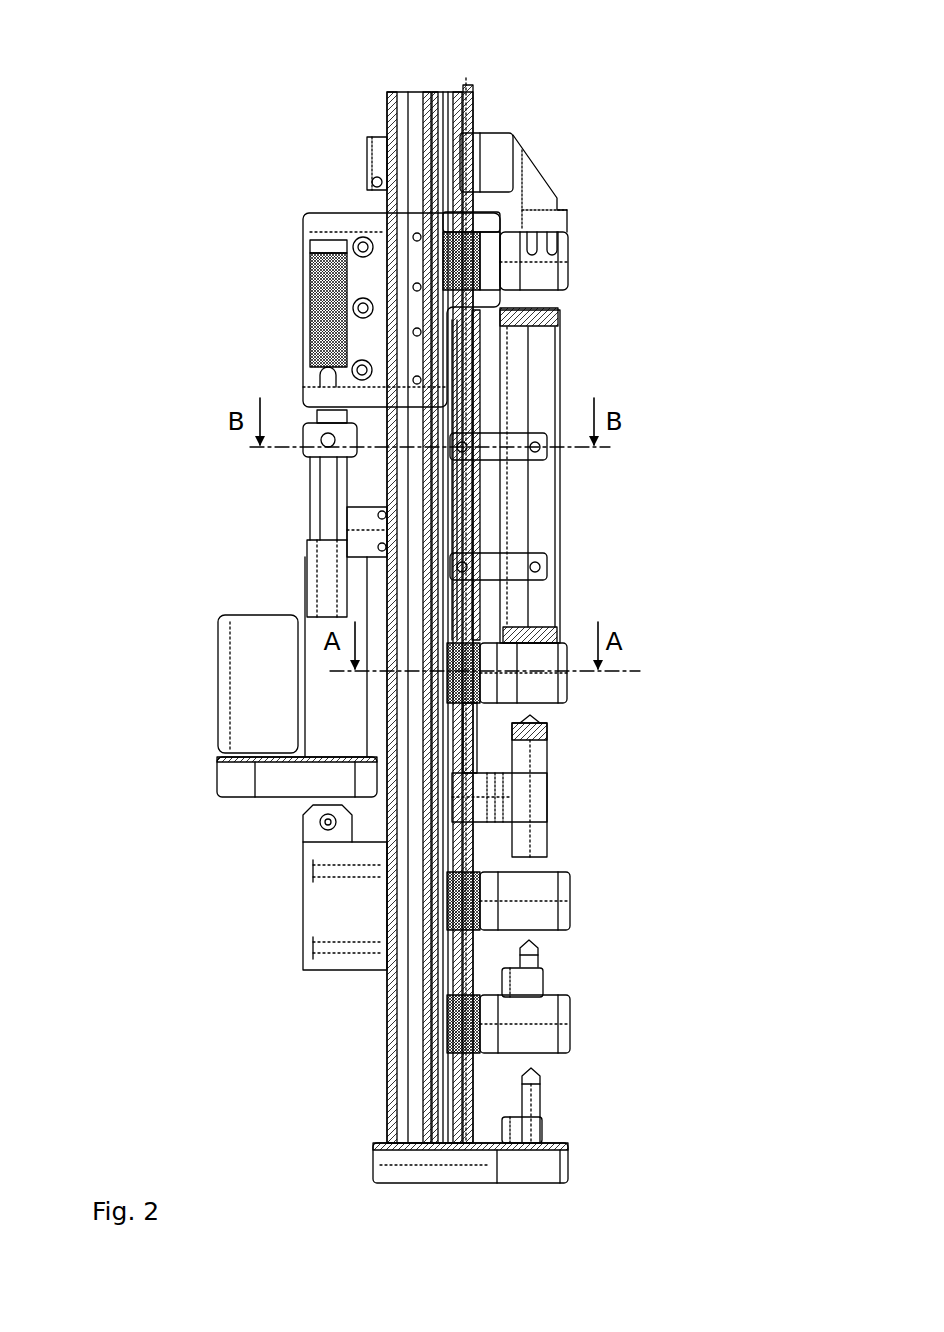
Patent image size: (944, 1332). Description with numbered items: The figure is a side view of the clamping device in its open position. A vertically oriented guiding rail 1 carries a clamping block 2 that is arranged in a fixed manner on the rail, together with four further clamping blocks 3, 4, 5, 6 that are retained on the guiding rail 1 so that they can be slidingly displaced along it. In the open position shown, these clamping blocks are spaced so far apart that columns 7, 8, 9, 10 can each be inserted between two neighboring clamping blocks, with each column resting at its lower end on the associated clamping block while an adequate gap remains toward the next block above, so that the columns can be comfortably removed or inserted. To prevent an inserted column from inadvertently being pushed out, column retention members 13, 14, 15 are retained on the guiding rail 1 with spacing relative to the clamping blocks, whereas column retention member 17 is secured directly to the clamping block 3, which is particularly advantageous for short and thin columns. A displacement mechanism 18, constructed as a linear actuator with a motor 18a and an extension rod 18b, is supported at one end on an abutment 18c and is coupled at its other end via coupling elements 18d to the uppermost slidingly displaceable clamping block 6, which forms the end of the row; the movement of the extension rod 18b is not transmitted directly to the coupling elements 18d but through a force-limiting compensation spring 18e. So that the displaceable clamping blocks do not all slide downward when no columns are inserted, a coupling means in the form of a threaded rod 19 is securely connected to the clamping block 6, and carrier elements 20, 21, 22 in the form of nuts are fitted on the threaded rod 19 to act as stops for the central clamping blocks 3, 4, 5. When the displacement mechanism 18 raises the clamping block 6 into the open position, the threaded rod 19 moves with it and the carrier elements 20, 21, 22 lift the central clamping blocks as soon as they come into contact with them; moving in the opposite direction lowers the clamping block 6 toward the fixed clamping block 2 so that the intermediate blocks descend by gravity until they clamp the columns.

The guiding rail 1 is at (462, 110).
The clamping block 2 is at (548, 1173).
The clamping block 3 is at (567, 1025).
The clamping block 4 is at (568, 897).
The clamping block 5 is at (550, 660).
The clamping block 6 is at (553, 268).
The column 7 is at (527, 1103).
The column 8 is at (537, 958).
The column 9 is at (538, 843).
The column 10 is at (537, 480).
The column retention member 13 is at (520, 442).
The column retention member 14 is at (540, 566).
The column retention member 15 is at (515, 795).
The column retention member 17 is at (507, 1132).
The displacement mechanism 18 is at (255, 553).
The motor 18a is at (237, 660).
The extension rod 18b is at (330, 487).
The abutment 18c is at (330, 905).
The coupling elements 18d is at (337, 222).
The force-limiting compensation spring 18e is at (325, 275).
The threaded rod 19 is at (467, 748).
The carrier element 20 is at (472, 1053).
The carrier element 21 is at (470, 932).
The carrier element 22 is at (467, 707).